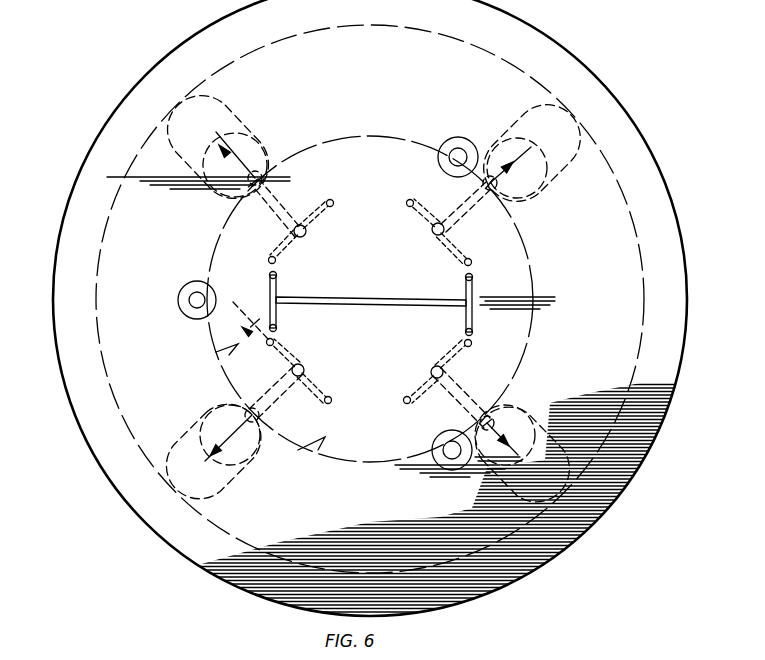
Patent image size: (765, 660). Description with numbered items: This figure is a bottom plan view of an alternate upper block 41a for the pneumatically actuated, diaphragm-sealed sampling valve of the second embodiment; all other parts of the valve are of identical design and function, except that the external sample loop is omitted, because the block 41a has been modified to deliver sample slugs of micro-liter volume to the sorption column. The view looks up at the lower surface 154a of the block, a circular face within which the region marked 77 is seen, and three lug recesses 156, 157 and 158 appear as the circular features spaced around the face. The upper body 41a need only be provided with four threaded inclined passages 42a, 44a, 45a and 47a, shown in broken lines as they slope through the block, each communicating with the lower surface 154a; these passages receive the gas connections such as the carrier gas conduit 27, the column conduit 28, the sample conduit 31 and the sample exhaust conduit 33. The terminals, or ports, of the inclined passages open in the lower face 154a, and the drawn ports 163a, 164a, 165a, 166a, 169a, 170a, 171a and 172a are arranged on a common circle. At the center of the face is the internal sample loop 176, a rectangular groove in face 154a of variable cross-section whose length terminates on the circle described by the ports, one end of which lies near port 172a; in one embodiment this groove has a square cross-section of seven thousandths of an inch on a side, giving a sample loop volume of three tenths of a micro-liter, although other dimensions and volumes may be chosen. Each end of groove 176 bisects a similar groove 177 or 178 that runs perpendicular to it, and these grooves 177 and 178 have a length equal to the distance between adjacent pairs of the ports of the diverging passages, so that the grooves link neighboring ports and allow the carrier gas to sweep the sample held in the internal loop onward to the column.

The upper block 41a is at (86, 443).
The lower surface 154a is at (155, 278).
The platform 77 is at (605, 278).
The internal sample loop 176 is at (382, 298).
The groove 177 is at (466, 284).
The groove 178 is at (276, 277).
The port 165a is at (331, 198).
The port 166a is at (268, 257).
The port 164a is at (409, 199).
The port 163a is at (471, 261).
The port 169a is at (274, 341).
The port 170a is at (329, 397).
The port 171a is at (409, 403).
The port 172a is at (471, 346).
The sample exhaust conduit 33 is at (265, 150).
The conduit 31 is at (526, 198).
The conduit 27 is at (527, 440).
The conduit 28 is at (232, 428).
The inclined passage 45a is at (237, 112).
The inclined passage 44a is at (516, 103).
The inclined passage 42a is at (519, 412).
The inclined passage 47a is at (182, 428).
The lug recess 157 is at (449, 140).
The lug recess 156 is at (436, 446).
The lug recess 158 is at (180, 306).